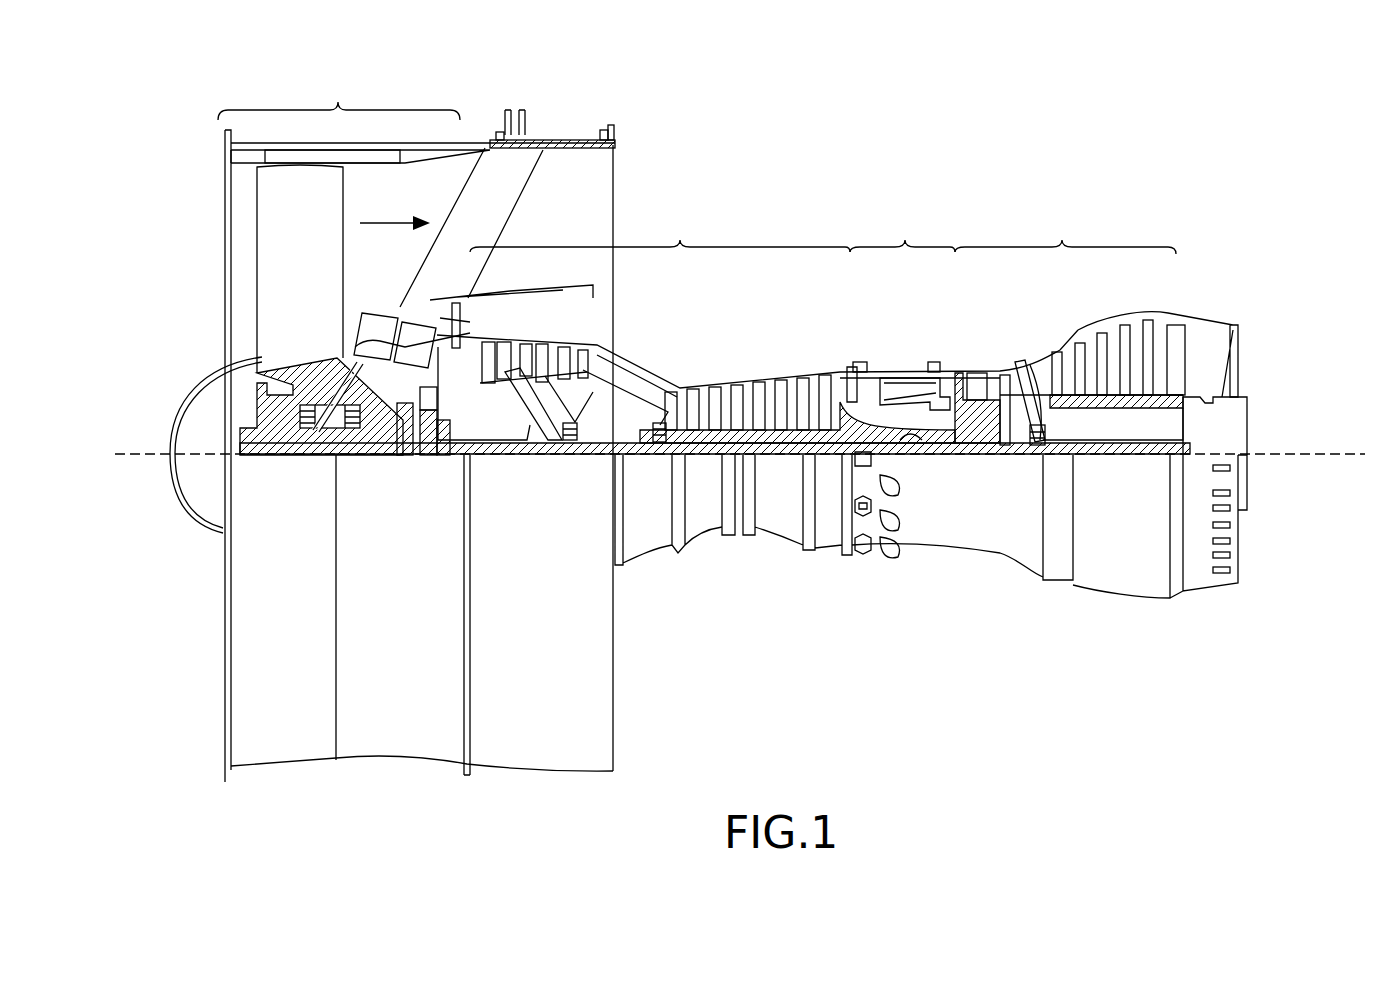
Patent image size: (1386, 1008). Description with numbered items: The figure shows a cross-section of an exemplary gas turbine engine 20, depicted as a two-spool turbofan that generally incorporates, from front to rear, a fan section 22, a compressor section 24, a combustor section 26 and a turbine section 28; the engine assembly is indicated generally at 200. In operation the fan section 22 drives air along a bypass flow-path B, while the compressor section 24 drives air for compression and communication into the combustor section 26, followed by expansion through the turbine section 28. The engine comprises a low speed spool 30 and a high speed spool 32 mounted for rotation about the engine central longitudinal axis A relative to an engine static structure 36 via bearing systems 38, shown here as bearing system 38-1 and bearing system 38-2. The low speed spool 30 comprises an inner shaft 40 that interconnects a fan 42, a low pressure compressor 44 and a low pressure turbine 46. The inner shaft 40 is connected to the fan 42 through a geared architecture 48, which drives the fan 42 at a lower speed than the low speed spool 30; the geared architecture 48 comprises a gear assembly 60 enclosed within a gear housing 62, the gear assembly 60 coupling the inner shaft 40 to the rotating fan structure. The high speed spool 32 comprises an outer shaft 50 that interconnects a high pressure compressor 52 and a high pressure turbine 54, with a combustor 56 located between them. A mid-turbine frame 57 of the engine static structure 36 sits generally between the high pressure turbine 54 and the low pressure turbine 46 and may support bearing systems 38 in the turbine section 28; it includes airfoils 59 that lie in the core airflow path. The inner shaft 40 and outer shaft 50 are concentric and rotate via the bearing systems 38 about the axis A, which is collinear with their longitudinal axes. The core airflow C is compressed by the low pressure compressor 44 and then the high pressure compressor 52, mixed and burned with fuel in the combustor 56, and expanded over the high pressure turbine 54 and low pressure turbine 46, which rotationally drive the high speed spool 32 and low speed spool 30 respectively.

The gas turbine engine 20 is at (963, 178).
The fan section 22 is at (315, 304).
The compressor section 24 is at (660, 230).
The combustor section 26 is at (902, 230).
The turbine section 28 is at (1065, 231).
The low speed spool 30 is at (788, 490).
The high speed spool 32 is at (822, 430).
The engine static structure 36 is at (205, 772).
The bearing system 38 is at (1033, 458).
The bearing system 38-1 is at (308, 455).
The bearing system 38-2 is at (568, 457).
The inner shaft 40 is at (634, 456).
The fan 42 is at (312, 266).
The low pressure compressor section 44 is at (565, 330).
The low pressure turbine section 46 is at (1118, 350).
The geared architecture 48 is at (431, 478).
The outer shaft 50 is at (905, 443).
The high pressure compressor 52 is at (795, 395).
The high pressure turbine section 54 is at (958, 373).
The combustor 56 is at (912, 388).
The mid-turbine frame 57 is at (1022, 362).
The airfoils 59 is at (1033, 365).
The gear assembly 60 is at (440, 432).
The gear housing 62 is at (437, 385).
The core engine assembly 200 is at (664, 348).
The engine central longitudinal axis A is at (141, 450).
The bypass flow-path B is at (388, 228).
The core airflow C is at (347, 328).